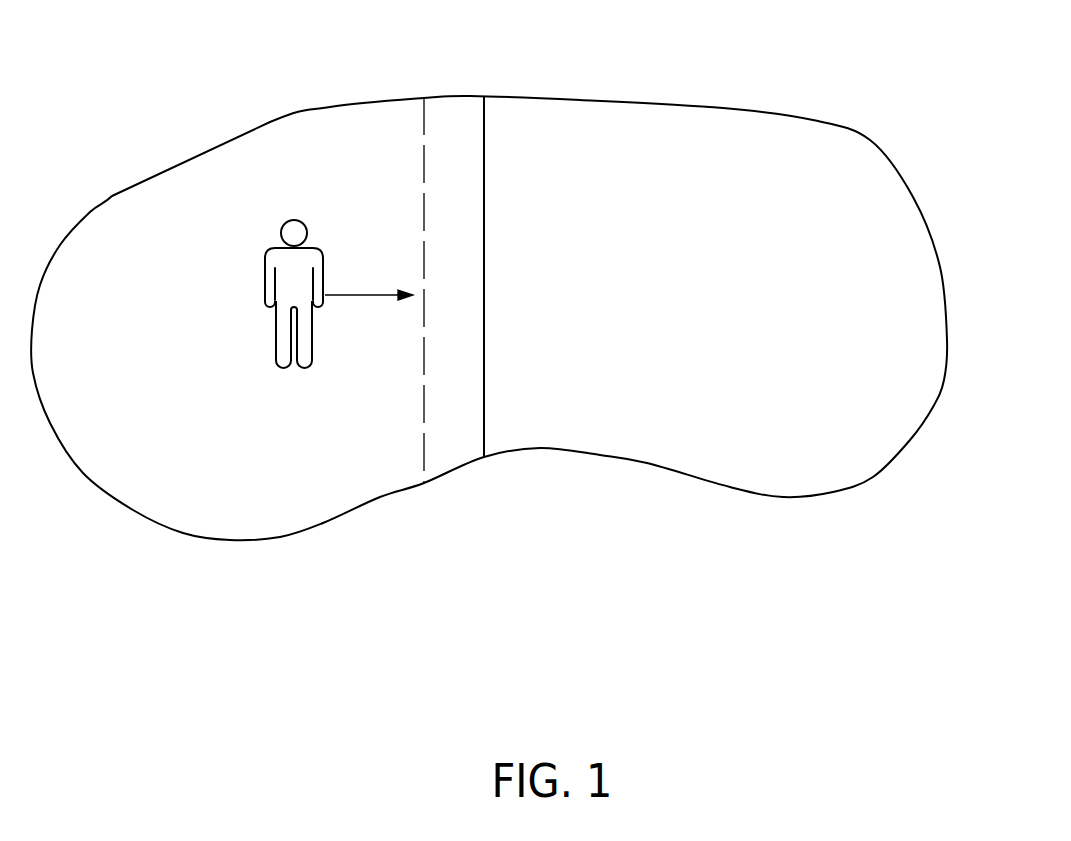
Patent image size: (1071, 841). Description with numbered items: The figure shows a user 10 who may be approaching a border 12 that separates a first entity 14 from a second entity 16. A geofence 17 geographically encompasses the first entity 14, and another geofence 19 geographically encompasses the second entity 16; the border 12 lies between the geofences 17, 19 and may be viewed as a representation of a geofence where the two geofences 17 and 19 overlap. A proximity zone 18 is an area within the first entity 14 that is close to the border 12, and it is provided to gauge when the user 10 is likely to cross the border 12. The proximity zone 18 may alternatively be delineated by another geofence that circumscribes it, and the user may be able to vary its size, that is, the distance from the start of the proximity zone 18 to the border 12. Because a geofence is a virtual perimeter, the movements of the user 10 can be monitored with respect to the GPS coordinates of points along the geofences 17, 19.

The user 10 is at (265, 290).
The border 12 is at (484, 273).
The first entity 14 is at (230, 444).
The second entity 16 is at (636, 386).
The geofence 17 is at (220, 146).
The proximity zone 18 is at (452, 185).
The geofence 19 is at (489, 292).